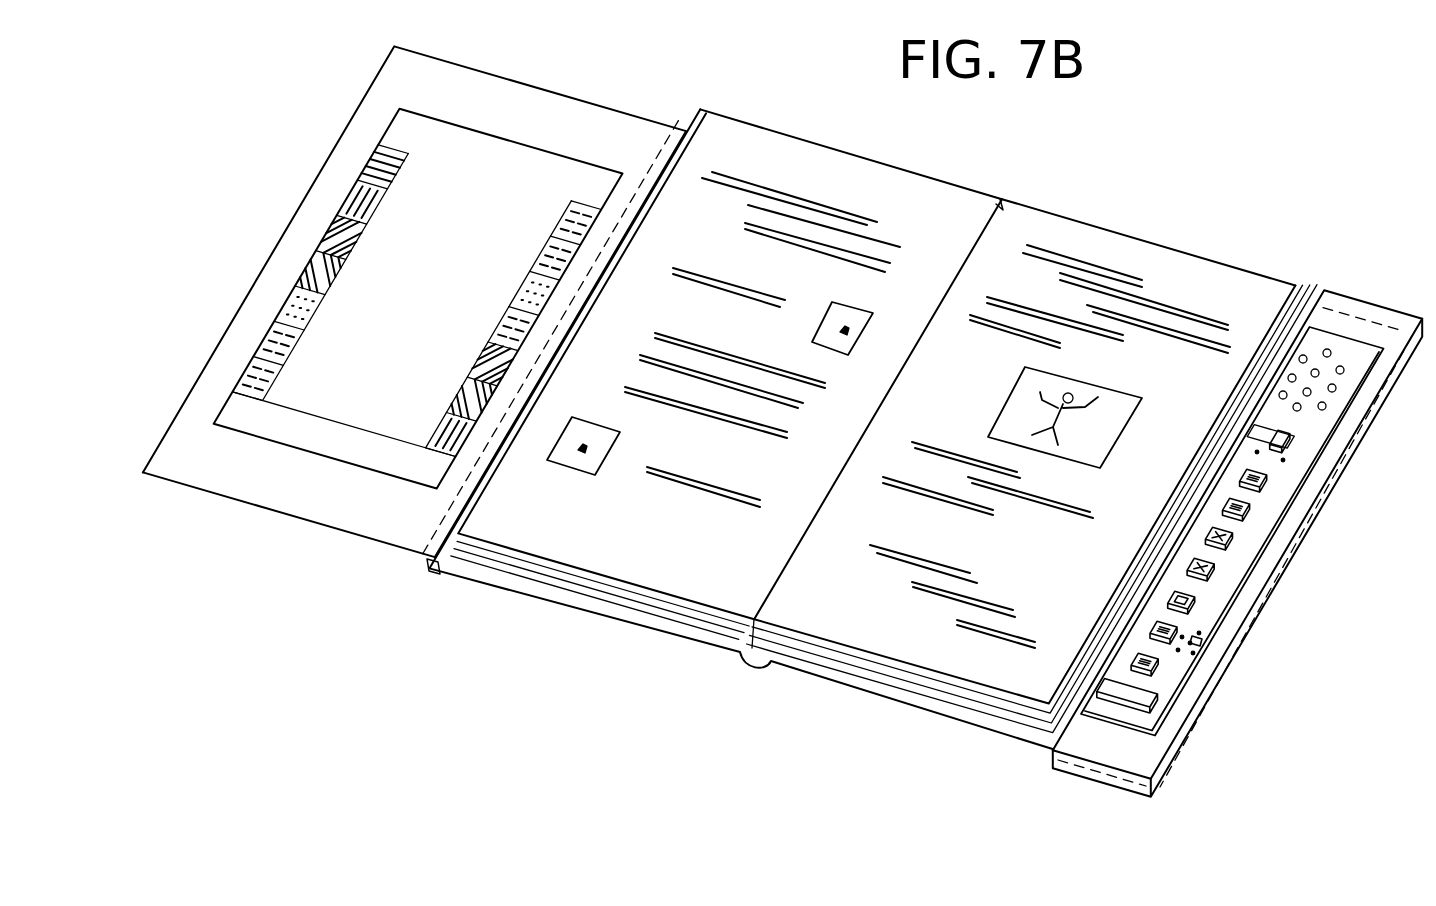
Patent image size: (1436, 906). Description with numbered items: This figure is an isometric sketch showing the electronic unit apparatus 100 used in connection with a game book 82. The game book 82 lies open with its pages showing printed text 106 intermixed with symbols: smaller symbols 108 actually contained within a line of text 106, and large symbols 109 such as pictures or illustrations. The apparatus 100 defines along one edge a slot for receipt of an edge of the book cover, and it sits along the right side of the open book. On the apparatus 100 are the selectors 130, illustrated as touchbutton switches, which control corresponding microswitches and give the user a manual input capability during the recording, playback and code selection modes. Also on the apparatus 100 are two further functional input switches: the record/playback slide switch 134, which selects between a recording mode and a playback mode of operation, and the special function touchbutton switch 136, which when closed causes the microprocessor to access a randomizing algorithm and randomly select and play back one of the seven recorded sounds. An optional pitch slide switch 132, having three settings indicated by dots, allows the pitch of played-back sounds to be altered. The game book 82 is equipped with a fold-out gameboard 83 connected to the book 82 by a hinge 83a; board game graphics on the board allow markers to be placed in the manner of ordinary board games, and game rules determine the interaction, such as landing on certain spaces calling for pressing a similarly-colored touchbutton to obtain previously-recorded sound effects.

The game book 82 is at (297, 213).
The fold-out gameboard 83 is at (268, 512).
The hinge 83a is at (433, 577).
The apparatus 100 is at (1420, 222).
The text 106 is at (850, 228).
The smaller symbols 108 is at (576, 478).
The large symbols 109 is at (1186, 350).
The selectors 130 is at (1250, 510).
The pitch slide switch 132 is at (1192, 641).
The slide switch 134 is at (1293, 448).
The touchbutton switch 136 is at (1153, 698).